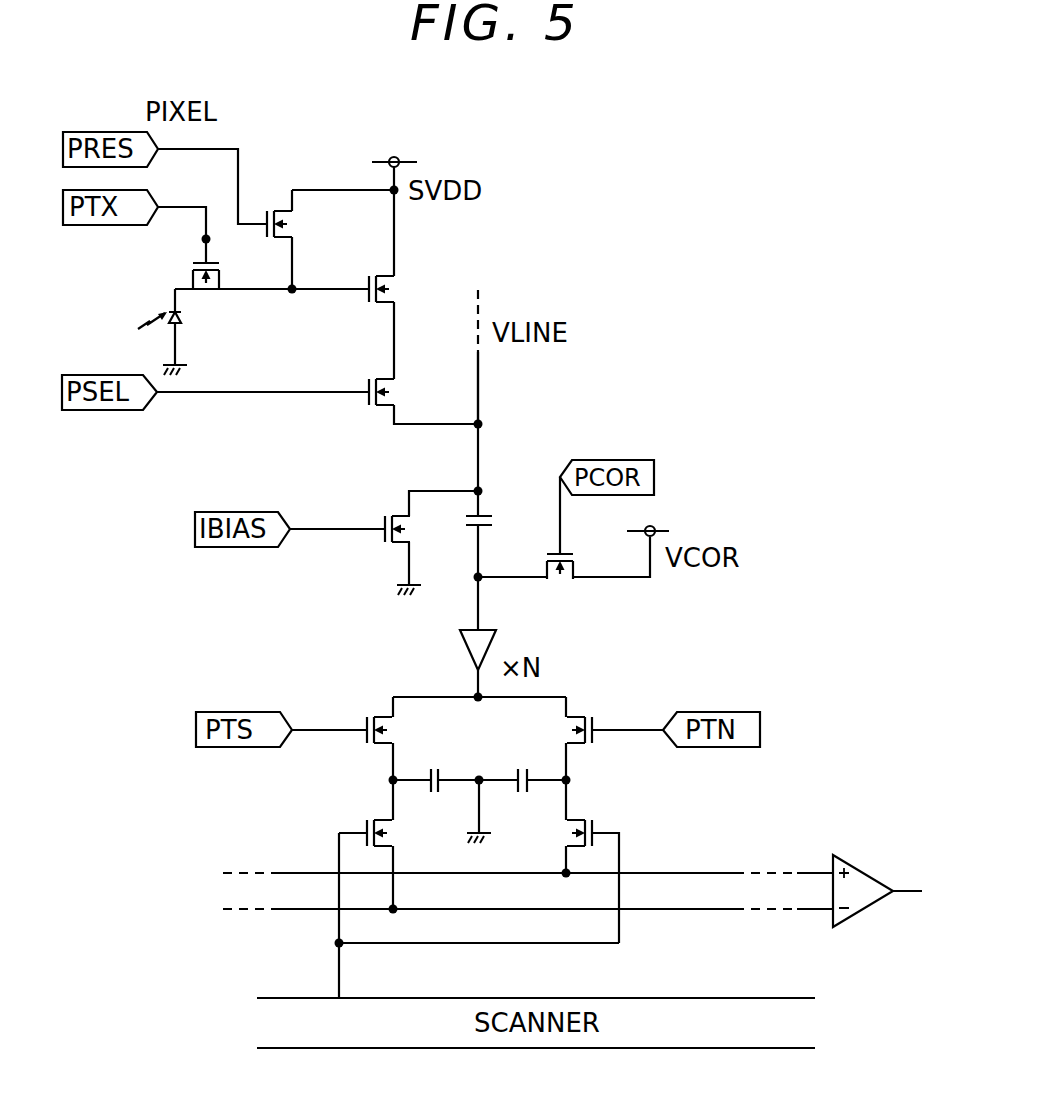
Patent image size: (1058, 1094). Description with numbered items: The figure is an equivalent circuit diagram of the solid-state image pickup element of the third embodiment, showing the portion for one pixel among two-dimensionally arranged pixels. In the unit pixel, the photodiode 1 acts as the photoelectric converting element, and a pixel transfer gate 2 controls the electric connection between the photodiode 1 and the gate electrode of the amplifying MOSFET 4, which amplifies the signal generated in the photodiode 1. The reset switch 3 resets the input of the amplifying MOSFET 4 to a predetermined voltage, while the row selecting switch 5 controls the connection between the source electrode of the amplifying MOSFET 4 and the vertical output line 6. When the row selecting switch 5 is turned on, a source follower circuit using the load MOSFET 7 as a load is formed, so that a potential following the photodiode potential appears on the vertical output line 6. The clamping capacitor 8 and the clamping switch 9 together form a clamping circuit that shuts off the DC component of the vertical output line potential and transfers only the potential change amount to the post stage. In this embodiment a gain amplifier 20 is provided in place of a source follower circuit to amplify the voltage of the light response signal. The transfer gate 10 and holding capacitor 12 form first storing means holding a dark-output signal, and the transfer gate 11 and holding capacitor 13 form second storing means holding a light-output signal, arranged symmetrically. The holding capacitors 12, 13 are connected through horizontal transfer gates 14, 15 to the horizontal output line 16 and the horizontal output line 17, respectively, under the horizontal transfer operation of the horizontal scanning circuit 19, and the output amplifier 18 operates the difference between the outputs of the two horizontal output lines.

The photodiode 1 is at (183, 318).
The pixel transfer gate 2 is at (190, 275).
The reset switch 3 is at (300, 222).
The amplifying MOSFET 4 is at (400, 283).
The row selecting switch 5 is at (400, 387).
The vertical output line 6 is at (480, 395).
The load MOSFET 7 is at (393, 513).
The clamping capacitor 8 is at (493, 520).
The clamping switch 9 is at (580, 565).
The transfer gate 10 is at (365, 720).
The transfer gate 11 is at (594, 719).
The holding capacitor 12 is at (435, 768).
The holding capacitor 13 is at (520, 768).
The horizontal transfer gate 14 is at (385, 815).
The horizontal transfer gate 15 is at (575, 815).
The horizontal output line 16 is at (663, 908).
The horizontal output line 17 is at (718, 873).
The output amplifier 18 is at (863, 872).
The horizontal scanning circuit 19 is at (727, 997).
The gain amplifier 20 is at (462, 642).